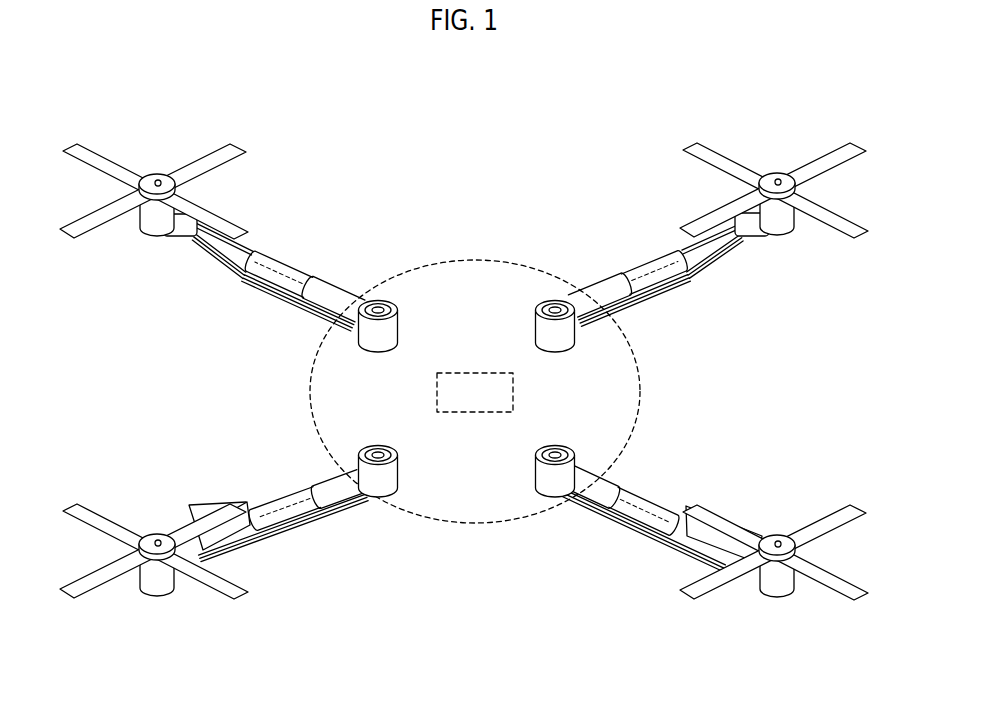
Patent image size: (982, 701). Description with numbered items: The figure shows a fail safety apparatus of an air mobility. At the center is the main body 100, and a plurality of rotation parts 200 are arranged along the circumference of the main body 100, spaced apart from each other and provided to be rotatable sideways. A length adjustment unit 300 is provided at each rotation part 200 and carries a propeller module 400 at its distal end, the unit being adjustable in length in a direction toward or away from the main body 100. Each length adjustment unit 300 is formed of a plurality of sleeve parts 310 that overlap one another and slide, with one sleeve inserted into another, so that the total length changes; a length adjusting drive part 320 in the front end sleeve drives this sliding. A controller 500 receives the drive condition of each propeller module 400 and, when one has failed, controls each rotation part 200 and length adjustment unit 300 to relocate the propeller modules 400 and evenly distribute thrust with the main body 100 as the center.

The main body 100 is at (472, 260).
The rotation part 200 is at (381, 296).
The length adjustment unit 300 is at (470, 331).
The sleeve part 310 is at (633, 317).
The length adjusting drive part 320 is at (648, 266).
The propeller module 400 is at (153, 163).
The controller 500 is at (475, 392).